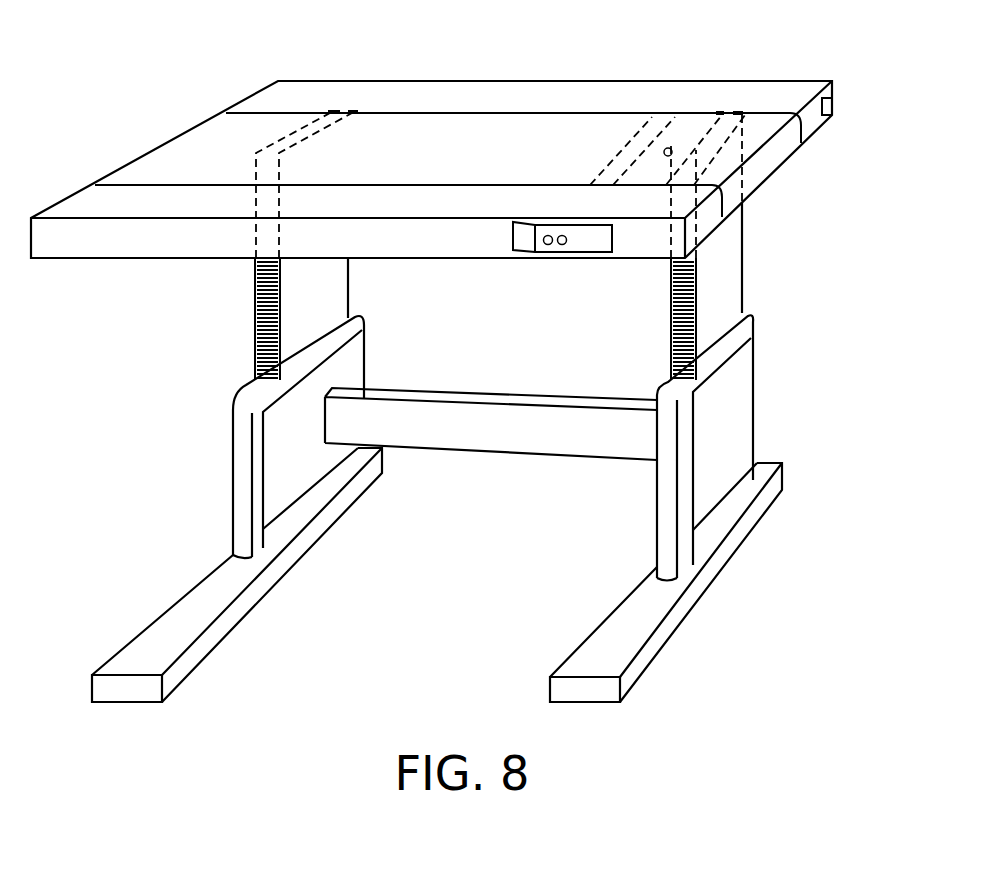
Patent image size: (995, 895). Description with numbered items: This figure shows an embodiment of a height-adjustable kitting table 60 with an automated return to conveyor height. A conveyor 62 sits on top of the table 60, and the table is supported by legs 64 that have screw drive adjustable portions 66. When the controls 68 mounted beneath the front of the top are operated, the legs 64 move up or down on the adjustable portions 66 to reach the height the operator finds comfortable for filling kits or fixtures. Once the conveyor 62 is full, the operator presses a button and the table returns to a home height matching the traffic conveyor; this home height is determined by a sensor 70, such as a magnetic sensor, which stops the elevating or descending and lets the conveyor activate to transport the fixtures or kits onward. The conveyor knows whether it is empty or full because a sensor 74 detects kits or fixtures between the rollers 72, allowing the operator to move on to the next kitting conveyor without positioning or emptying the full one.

The height-adjustable table 60 is at (800, 81).
The conveyor 62 is at (187, 143).
The legs 64 is at (233, 470).
The screw drive adjustable portions 66 is at (255, 328).
The controls 68 is at (548, 256).
The sensor 70 is at (833, 107).
The rollers 72 is at (652, 125).
The sensor 74 is at (669, 148).